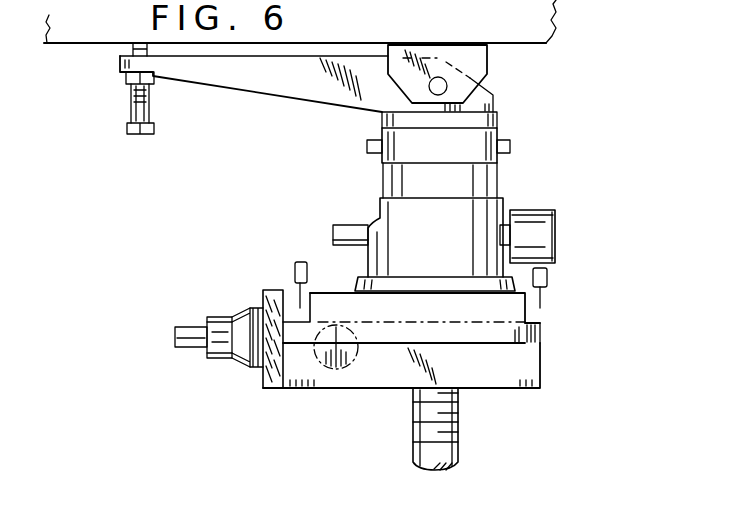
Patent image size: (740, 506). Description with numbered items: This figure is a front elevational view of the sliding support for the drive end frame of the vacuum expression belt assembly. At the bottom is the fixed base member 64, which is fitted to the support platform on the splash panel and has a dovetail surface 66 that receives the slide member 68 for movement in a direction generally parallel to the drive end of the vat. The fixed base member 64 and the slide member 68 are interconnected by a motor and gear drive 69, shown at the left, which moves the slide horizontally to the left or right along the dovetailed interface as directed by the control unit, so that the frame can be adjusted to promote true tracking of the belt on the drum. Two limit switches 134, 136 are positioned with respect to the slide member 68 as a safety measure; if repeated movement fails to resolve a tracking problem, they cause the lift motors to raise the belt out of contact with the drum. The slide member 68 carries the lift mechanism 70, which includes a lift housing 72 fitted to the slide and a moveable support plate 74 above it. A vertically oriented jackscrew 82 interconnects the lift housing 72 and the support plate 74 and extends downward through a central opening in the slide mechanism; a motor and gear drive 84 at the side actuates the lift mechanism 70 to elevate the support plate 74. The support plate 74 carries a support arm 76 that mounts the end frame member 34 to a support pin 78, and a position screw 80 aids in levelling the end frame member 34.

The end frame member 34 is at (548, 36).
The support arm 76 is at (322, 90).
The position screw 80 is at (151, 134).
The support pin 78 is at (438, 77).
The moveable support plate 74 is at (490, 120).
The lift housing 72 is at (448, 247).
The lift mechanism 70 is at (518, 194).
The motor and gear drive 84 is at (556, 230).
The limit switch 136 is at (548, 276).
The limit switch 134 is at (293, 263).
The slide member 68 is at (478, 318).
The dovetail surface 66 is at (533, 333).
The fixed base member 64 is at (523, 368).
The motor and gear drive 69 is at (242, 368).
The jackscrew 82 is at (458, 433).